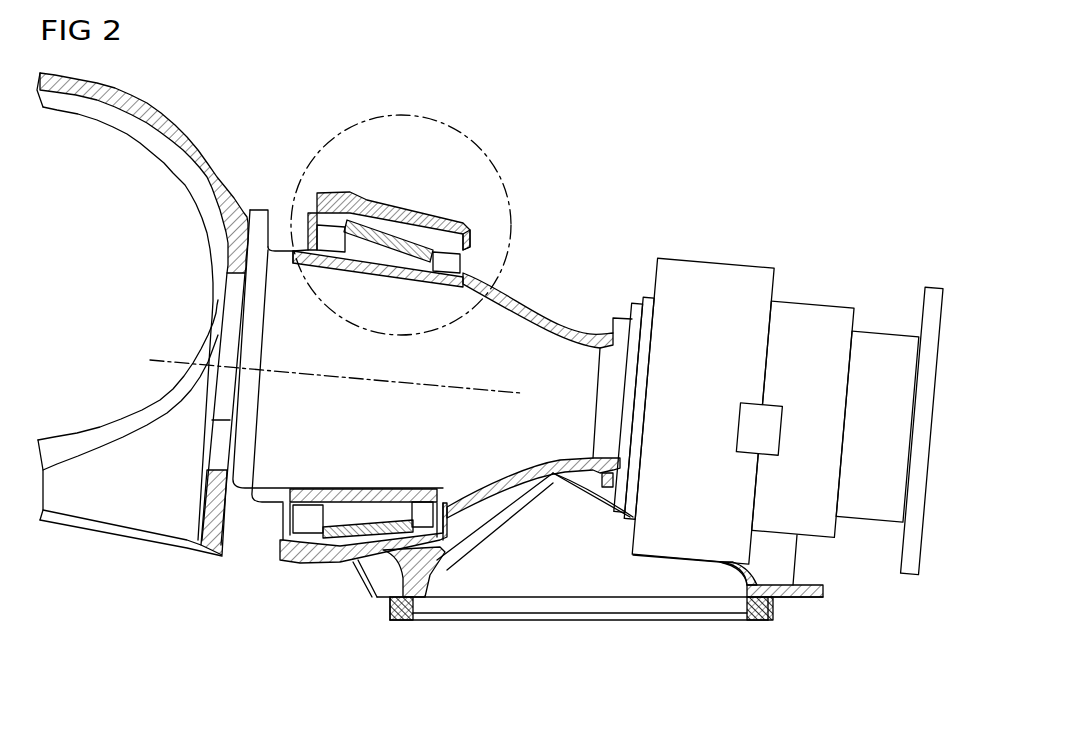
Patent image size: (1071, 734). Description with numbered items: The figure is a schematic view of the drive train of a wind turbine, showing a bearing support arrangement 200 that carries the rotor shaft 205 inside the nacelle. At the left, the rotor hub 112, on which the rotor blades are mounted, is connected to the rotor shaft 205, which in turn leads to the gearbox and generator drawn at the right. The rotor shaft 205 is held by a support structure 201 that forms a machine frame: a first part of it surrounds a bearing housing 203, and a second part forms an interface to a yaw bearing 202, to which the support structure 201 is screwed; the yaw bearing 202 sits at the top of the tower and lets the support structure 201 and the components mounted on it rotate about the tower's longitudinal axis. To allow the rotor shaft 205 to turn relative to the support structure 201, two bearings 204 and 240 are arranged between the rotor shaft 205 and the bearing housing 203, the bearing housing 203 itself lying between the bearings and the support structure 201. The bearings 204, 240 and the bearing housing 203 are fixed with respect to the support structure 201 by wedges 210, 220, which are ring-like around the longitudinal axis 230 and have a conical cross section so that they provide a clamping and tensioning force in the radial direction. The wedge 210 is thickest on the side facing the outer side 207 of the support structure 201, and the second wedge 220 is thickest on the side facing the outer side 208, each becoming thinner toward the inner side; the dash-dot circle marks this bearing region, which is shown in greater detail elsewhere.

The rotor hub 112 is at (122, 538).
The bearing support arrangement 200 is at (718, 202).
The support structure 201 is at (467, 222).
The yaw bearing 202 is at (562, 620).
The bearing housing 203 is at (383, 215).
The bearing 204 is at (347, 270).
The rotor shaft 205 is at (593, 337).
The outer side 207 is at (287, 213).
The outer side 208 is at (535, 245).
The wedge 210 is at (331, 206).
The second wedge 220 is at (449, 226).
The longitudinal axis 230 is at (310, 380).
The bearing 240 is at (447, 266).